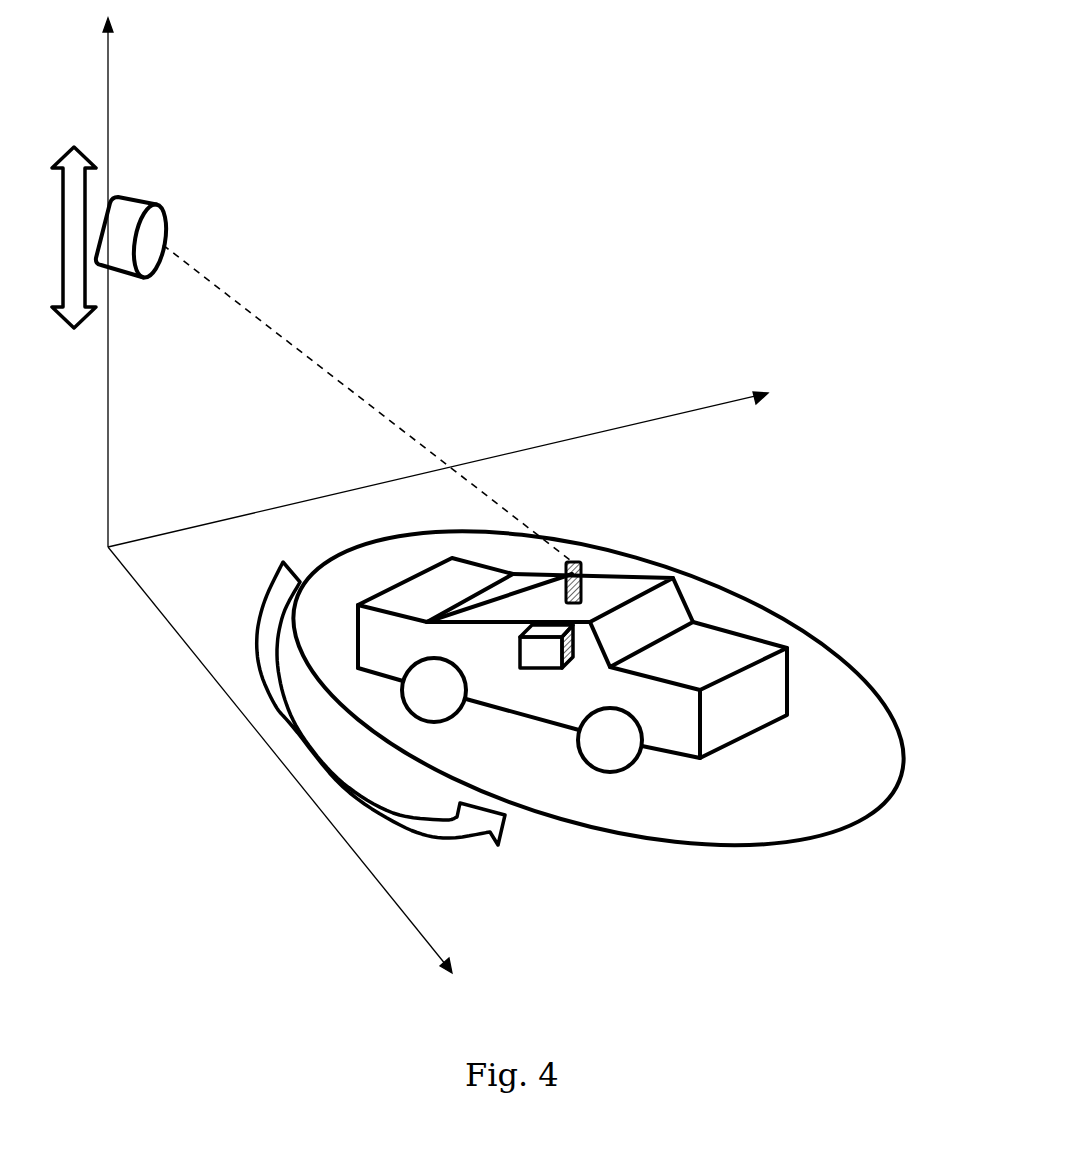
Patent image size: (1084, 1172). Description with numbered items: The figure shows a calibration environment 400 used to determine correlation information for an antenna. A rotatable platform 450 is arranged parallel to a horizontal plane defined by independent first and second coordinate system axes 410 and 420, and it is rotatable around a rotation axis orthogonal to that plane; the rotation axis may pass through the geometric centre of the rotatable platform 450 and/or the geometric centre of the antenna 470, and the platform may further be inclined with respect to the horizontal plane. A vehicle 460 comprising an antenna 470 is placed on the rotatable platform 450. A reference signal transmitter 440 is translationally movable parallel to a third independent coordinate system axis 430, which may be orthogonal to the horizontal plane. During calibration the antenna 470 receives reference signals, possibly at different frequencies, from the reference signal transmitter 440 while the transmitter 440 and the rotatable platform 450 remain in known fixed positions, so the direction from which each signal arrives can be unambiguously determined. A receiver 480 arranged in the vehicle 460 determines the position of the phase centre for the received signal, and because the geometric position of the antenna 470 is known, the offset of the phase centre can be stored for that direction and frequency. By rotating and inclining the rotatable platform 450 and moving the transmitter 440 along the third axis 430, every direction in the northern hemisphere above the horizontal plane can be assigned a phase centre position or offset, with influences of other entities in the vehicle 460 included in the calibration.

The calibration environment 400 is at (738, 40).
The first coordinate system axis 410 is at (280, 764).
The second coordinate system axis 420 is at (438, 469).
The third independent coordinate system axis 430 is at (78, 282).
The reference signal transmitter 440 is at (128, 217).
The rotatable platform 450 is at (822, 702).
The vehicle 460 is at (662, 597).
The antenna 470 is at (584, 580).
The receiver 480 is at (543, 670).